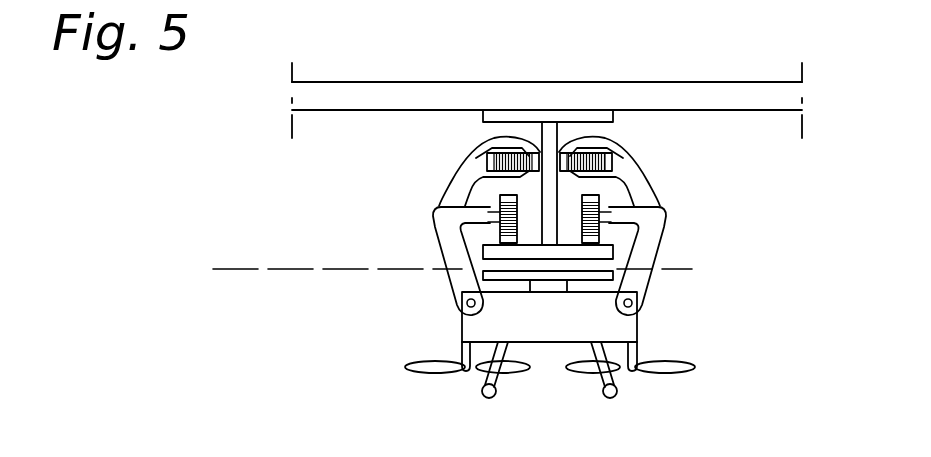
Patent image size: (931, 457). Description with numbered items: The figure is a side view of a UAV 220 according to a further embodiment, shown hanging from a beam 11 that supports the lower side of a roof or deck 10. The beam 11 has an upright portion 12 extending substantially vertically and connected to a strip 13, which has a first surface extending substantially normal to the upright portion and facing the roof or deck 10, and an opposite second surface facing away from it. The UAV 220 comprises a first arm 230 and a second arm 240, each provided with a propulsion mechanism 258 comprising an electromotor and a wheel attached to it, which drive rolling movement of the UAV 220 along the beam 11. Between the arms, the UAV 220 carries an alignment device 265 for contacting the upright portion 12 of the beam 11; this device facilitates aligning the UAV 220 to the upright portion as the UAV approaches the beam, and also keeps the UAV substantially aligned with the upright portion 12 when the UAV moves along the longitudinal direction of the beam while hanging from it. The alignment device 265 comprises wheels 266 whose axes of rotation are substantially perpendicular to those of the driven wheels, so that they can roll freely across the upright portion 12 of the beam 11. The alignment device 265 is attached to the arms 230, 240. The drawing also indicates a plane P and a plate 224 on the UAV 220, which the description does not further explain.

The roof or deck 10 is at (748, 97).
The beam 11 is at (566, 131).
The upright portion 12 is at (547, 136).
The strip 13 is at (642, 291).
The UAV 220 is at (407, 324).
The support plate 224 is at (547, 276).
The first arm 230 is at (437, 248).
The second arm 240 is at (645, 257).
The propulsion mechanism 258 is at (606, 207).
The alignment device 265 is at (453, 188).
The wheels 266 is at (535, 155).
The pivot plane P is at (252, 269).